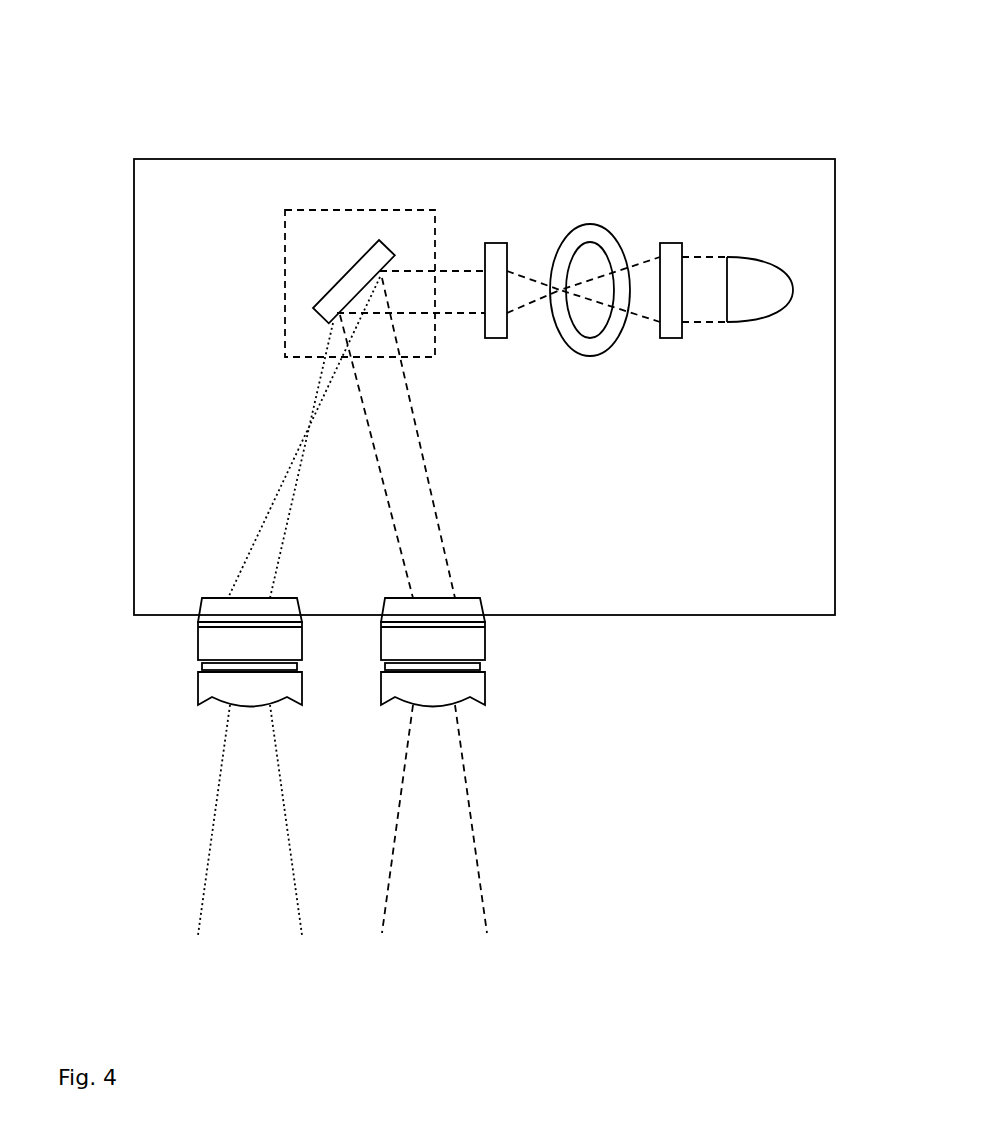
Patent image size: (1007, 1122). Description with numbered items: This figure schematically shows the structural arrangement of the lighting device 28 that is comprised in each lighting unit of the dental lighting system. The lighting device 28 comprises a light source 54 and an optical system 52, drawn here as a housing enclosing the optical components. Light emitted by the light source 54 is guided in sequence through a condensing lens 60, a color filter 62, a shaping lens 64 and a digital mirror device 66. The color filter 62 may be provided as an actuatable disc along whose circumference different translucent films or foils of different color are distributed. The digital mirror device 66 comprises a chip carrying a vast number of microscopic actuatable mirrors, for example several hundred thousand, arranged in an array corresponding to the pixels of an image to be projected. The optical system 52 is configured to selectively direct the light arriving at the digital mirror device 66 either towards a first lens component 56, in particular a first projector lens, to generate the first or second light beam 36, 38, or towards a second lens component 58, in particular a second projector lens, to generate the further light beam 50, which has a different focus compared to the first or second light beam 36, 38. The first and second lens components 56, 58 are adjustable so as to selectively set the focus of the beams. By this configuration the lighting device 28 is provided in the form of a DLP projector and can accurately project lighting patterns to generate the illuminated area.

The lighting device 28 is at (453, 475).
The optical system 52 is at (222, 231).
The digital mirror device 66 is at (285, 313).
The shaping lens 64 is at (500, 332).
The color filter 62 is at (597, 347).
The condensing lens 60 is at (673, 340).
The light source 54 is at (757, 300).
The first lens component 56 is at (207, 683).
The second lens component 58 is at (476, 708).
The first light beam 36 is at (226, 606).
The second light beam 38 is at (208, 855).
The further light beam 50 is at (477, 872).